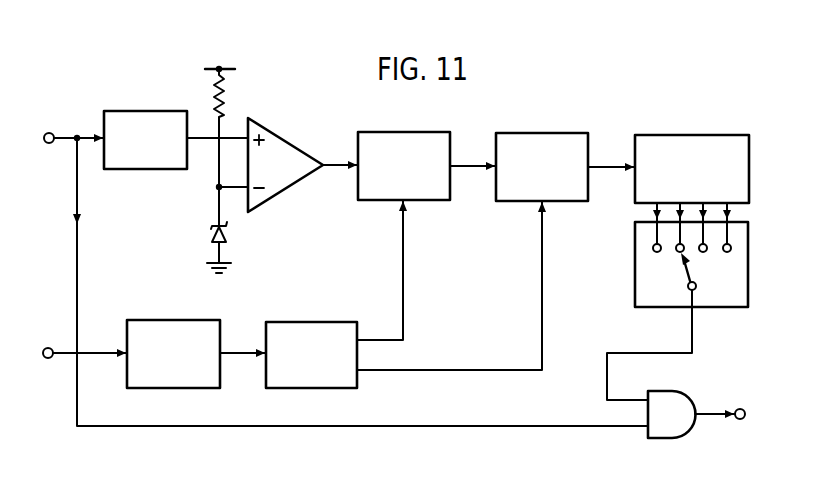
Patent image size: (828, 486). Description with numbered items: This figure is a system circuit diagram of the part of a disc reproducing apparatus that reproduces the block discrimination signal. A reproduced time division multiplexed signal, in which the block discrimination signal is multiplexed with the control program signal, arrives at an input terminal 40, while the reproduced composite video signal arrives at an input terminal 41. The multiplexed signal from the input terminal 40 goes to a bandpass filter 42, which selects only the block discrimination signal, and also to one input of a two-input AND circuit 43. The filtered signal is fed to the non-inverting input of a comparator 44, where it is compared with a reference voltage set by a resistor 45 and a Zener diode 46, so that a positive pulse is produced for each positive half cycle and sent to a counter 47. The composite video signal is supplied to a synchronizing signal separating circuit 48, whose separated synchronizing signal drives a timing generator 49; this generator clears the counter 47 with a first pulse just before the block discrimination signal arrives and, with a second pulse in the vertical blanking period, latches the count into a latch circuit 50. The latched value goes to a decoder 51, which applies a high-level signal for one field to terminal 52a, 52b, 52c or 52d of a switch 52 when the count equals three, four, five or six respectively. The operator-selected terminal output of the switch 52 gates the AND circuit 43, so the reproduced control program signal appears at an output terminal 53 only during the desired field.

The input terminal 40 is at (50, 132).
The input terminal 41 is at (48, 359).
The bandpass filter 42 is at (130, 111).
The 2-input AND circuit 43 is at (667, 439).
The comparator 44 is at (288, 137).
The resistor 45 is at (214, 99).
The Zener diode 46 is at (211, 236).
The counter 47 is at (398, 132).
The synchronizing signal separating circuit 48 is at (164, 320).
The timing generator 49 is at (303, 322).
The latch circuit 50 is at (538, 133).
The decoder 51 is at (680, 135).
The switch 52 is at (669, 311).
The terminal 52a is at (652, 248).
The terminal 52b is at (677, 254).
The terminal 52c is at (705, 252).
The terminal 52d is at (728, 252).
The output terminal 53 is at (740, 420).